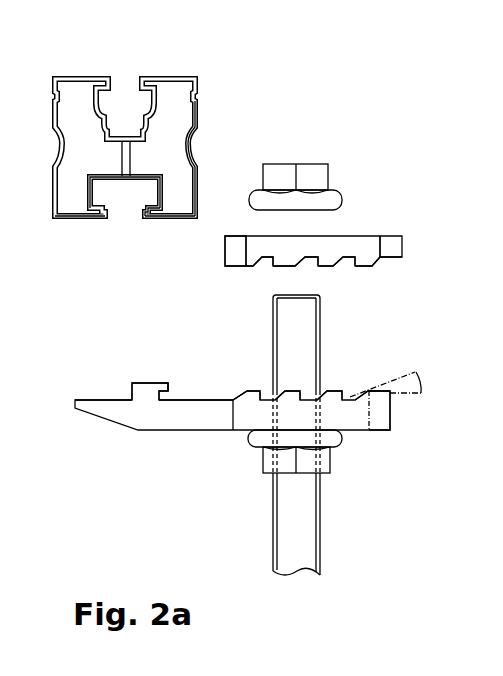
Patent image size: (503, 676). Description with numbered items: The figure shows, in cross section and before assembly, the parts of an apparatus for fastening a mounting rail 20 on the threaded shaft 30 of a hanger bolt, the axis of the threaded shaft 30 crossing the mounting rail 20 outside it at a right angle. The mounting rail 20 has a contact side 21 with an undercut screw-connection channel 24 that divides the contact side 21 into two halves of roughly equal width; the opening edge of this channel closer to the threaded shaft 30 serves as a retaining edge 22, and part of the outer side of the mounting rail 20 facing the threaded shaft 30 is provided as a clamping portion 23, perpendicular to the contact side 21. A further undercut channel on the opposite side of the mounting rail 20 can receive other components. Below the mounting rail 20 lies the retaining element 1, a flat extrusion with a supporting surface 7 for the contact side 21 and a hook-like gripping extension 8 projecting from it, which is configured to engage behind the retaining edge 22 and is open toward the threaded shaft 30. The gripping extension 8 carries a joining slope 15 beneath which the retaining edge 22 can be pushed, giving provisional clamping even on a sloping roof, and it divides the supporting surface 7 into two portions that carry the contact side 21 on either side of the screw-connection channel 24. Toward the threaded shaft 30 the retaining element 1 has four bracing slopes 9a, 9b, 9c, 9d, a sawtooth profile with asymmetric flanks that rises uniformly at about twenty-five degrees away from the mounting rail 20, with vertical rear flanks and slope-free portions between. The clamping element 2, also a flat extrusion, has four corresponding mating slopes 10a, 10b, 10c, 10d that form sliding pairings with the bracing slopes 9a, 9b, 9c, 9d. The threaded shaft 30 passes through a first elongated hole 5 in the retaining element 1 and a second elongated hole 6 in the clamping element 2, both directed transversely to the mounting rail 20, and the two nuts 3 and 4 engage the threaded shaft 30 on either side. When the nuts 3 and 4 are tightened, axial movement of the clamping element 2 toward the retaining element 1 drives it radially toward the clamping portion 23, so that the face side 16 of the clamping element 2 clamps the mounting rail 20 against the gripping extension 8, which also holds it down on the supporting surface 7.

The retaining element 1 is at (175, 431).
The clamping element 2 is at (392, 237).
The nut 3 is at (332, 460).
The nut 4 is at (332, 178).
The first elongated hole 5 is at (368, 412).
The second elongated hole 6 is at (380, 247).
The supporting surface 7 is at (97, 399).
The gripping extension 8 is at (148, 382).
The bracing slope 9a is at (243, 393).
The bracing slope 9b is at (277, 399).
The bracing slope 9c is at (322, 392).
The bracing slope 9d is at (360, 394).
The mating slope 10a is at (256, 263).
The mating slope 10b is at (276, 265).
The mating slope 10c is at (336, 263).
The mating slope 10d is at (378, 266).
The joining slope 15 is at (172, 390).
The face side 16 is at (223, 252).
The mounting rail 20 is at (199, 78).
The contact side 21 is at (80, 219).
The retaining edge 22 is at (148, 212).
The clamping portion 23 is at (199, 208).
The undercut screw-connection channel 24 is at (158, 193).
The threaded shaft 30 is at (320, 540).